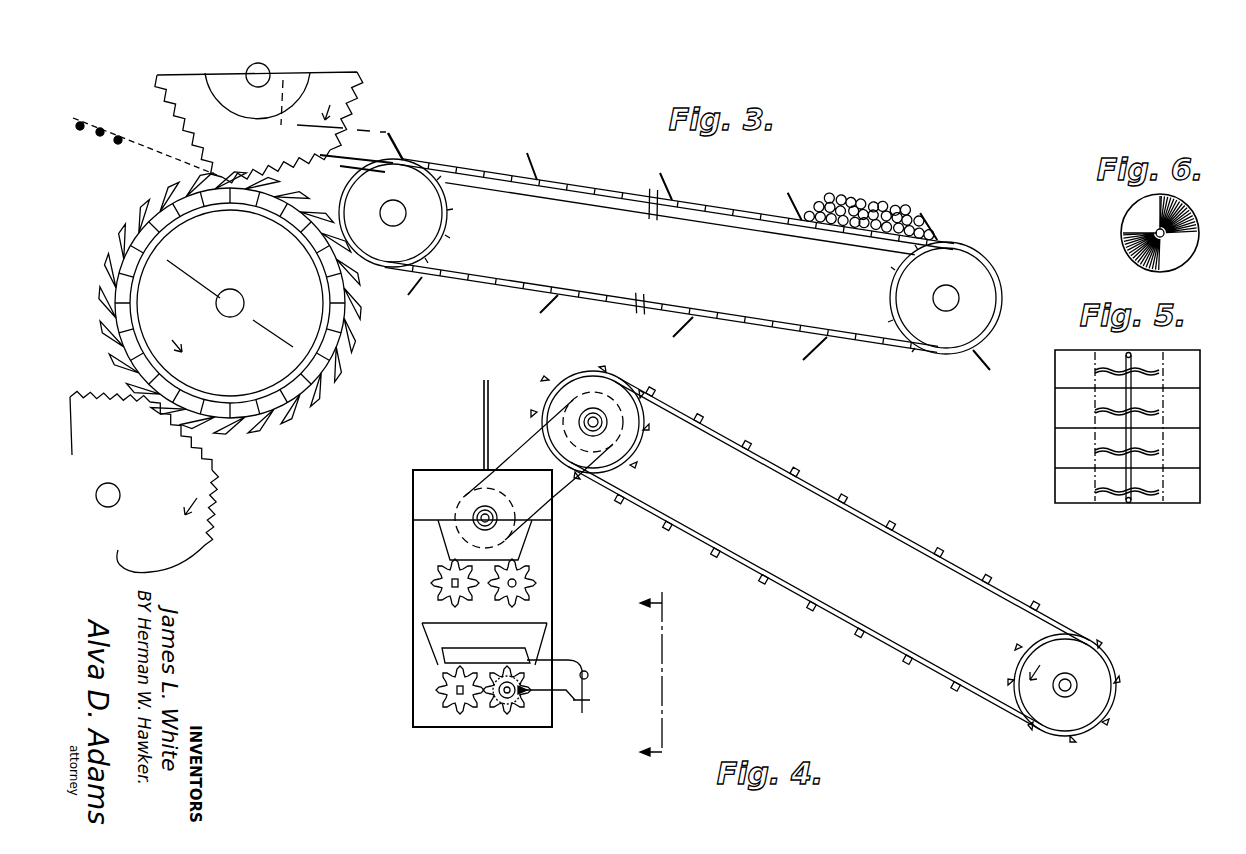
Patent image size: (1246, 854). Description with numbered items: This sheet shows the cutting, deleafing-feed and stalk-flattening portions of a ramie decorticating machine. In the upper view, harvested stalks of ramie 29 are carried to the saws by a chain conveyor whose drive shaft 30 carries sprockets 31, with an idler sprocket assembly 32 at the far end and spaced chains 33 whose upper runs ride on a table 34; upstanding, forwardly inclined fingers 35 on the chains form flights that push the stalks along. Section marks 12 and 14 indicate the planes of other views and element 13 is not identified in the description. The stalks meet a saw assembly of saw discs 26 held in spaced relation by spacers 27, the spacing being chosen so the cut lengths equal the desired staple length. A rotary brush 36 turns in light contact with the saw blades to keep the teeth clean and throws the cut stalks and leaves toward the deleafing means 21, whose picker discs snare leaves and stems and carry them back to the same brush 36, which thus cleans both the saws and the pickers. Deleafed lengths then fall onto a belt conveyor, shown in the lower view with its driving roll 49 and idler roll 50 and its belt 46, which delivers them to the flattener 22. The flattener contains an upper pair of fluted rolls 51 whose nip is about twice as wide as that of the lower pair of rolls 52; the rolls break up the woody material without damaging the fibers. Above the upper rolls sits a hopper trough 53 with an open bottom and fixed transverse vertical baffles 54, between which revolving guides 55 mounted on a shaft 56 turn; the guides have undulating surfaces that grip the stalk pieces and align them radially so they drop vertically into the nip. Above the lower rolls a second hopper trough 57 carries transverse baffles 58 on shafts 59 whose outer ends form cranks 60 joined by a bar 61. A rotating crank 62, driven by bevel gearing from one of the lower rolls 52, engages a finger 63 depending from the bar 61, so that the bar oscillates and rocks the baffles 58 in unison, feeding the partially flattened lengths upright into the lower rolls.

In FIG. 3, the conveyor 12 is at (670, 242).
In FIG. 3, the brush wheel 13 is at (236, 307).
In FIG. 4, the section line 14 is at (668, 678).
In FIG. 3, the deleafing means 21 is at (207, 517).
In FIG. 4, the flattener 22 is at (414, 547).
In FIG. 3, the saw discs 26 is at (290, 123).
In FIG. 3, the spacers 27 is at (252, 126).
In FIG. 3, the stalks of ramie 29 is at (863, 214).
In FIG. 3, the drive shaft 30 is at (412, 213).
In FIG. 3, the sprockets 31 is at (447, 226).
In FIG. 3, the idler sprocket assembly 32 is at (893, 294).
In FIG. 3, the spaced chains 33 is at (662, 307).
In FIG. 3, the table 34 is at (613, 195).
In FIG. 3, the fingers 35 is at (400, 136).
In FIG. 3, the rotary brush 36 is at (300, 385).
In FIG. 4, the conveyor belt 46 is at (794, 496).
In FIG. 4, the driving roll 49 is at (640, 447).
In FIG. 4, the idler roll 50 is at (1070, 737).
In FIG. 4, the upper pair of fluted rolls 51 is at (508, 598).
In FIG. 4, the lower pair of rolls 52 is at (506, 714).
In FIG. 4, the hopper trough 53 is at (535, 538).
In FIG. 5, the hopper trough 53 is at (1060, 465).
In FIG. 5, the transverse vertical baffles 54 is at (1185, 465).
In FIG. 5, the revolving guides 55 is at (1163, 407).
In FIG. 6, the revolving guides 55 is at (1181, 262).
In FIG. 4, the shaft 56 is at (480, 512).
In FIG. 5, the shaft 56 is at (1131, 504).
In FIG. 4, the hopper trough 57 is at (548, 642).
In FIG. 4, the transverse baffles 58 is at (486, 656).
In FIG. 4, the shafts 59 is at (562, 660).
In FIG. 4, the cranks 60 is at (580, 666).
In FIG. 4, the bar 61 is at (590, 676).
In FIG. 4, the rotating crank 62 is at (568, 700).
In FIG. 4, the finger 63 is at (591, 700).